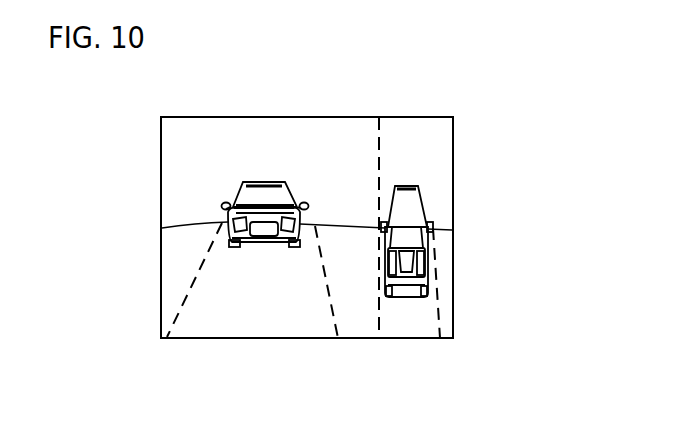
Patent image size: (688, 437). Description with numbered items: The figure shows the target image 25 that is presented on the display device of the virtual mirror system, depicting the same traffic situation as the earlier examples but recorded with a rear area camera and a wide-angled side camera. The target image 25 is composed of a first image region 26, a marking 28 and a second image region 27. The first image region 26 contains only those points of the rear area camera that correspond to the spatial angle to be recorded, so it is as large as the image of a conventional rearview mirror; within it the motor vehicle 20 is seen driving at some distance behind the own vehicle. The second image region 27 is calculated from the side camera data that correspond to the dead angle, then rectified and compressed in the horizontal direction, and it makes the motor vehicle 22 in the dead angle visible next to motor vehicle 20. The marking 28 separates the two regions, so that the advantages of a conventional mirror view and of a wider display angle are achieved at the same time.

The motor vehicle 20 is at (307, 202).
The motor vehicle 22 is at (425, 205).
The target image 25 is at (420, 103).
The first image region 26 is at (257, 143).
The second image region 27 is at (411, 297).
The marking 28 is at (372, 297).